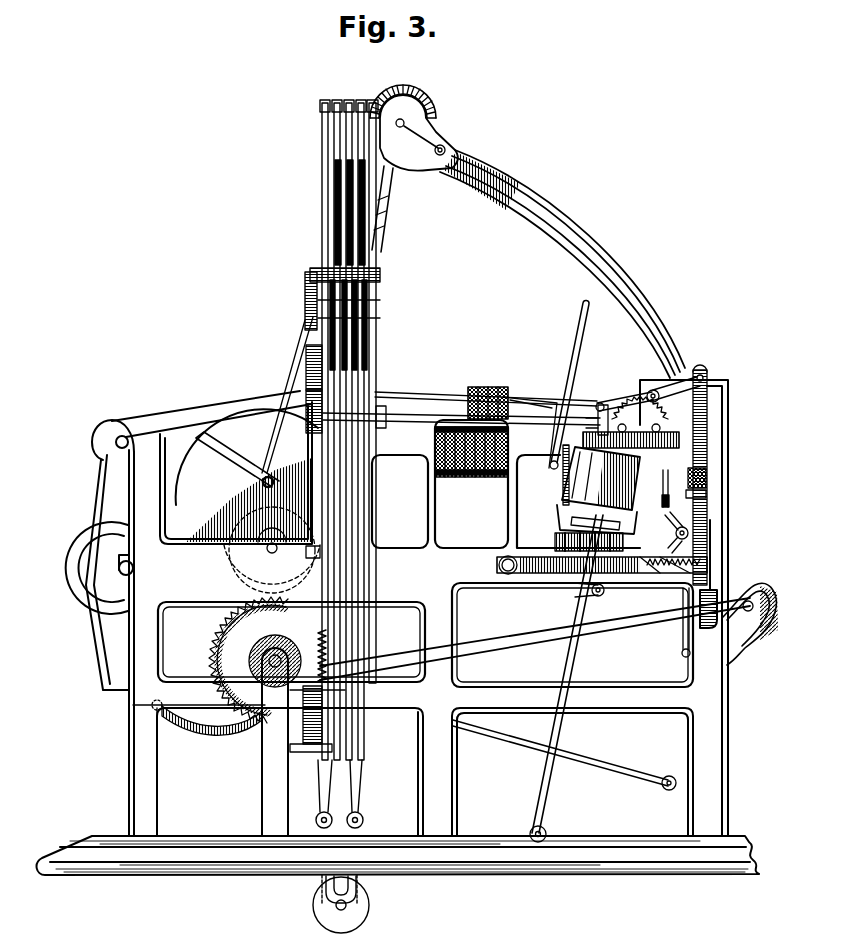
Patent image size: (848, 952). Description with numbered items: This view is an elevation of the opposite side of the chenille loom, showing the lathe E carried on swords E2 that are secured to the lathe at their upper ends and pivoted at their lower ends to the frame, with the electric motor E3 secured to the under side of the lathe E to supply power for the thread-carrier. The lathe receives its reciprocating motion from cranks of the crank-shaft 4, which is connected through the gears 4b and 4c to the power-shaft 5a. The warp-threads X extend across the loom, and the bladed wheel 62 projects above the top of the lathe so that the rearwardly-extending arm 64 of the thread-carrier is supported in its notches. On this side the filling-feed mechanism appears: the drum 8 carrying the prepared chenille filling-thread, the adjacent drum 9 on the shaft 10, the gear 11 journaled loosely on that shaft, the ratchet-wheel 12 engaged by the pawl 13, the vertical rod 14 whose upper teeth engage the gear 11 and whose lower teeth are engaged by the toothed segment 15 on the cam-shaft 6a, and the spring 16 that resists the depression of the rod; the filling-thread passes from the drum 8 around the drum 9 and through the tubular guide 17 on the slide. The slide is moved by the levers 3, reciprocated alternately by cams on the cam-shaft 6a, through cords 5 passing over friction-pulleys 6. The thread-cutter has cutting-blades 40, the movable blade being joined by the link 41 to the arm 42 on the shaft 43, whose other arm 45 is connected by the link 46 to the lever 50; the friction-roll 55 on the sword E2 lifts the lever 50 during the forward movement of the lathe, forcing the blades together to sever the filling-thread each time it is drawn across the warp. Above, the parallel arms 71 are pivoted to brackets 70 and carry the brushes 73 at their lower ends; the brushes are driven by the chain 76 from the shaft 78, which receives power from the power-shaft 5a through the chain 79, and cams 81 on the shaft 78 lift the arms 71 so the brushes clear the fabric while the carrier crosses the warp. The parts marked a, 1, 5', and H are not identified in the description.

The cams 81 is at (403, 100).
The shaft 78 is at (426, 124).
The brackets 70 is at (419, 133).
The chain 76 is at (470, 168).
The chain 79 is at (388, 212).
The parallel arms 71 is at (546, 208).
The brushes 73 is at (660, 378).
The pawl 13 is at (372, 393).
The drum 9 is at (477, 390).
The rod a is at (576, 352).
The tubular guide 17 is at (608, 403).
The rearwardly-extending arm 64 is at (596, 428).
The gear 11 is at (308, 412).
The ratchet-wheel 12 is at (308, 426).
The shaft 10 is at (391, 422).
The gear 4c is at (258, 466).
The warp-threads X is at (530, 432).
The power-shaft 5a is at (264, 483).
The drum 8 is at (470, 478).
The bladed wheel 62 is at (562, 470).
The lathe E is at (601, 478).
The cutting-blades 40 is at (636, 449).
The cords 5 is at (719, 474).
The friction-pulleys 6 is at (706, 494).
The link 41 is at (662, 492).
The arm 42 is at (669, 521).
The shaft 43 is at (689, 532).
The arm 45 is at (667, 548).
The bracket 1 is at (558, 517).
The electric motor E3 is at (571, 541).
The gear 4b is at (234, 560).
The crank-shaft 4 is at (267, 553).
The vertical rod 14 is at (310, 554).
The lever 50 is at (564, 576).
The friction-roll 55 is at (601, 594).
The link 46 is at (658, 577).
The spring 16 is at (326, 648).
The cam-shaft 6a is at (263, 650).
The toothed segment 15 is at (260, 661).
The swords of the lathe E2 is at (572, 635).
The hook 5' is at (711, 631).
The frame opening H is at (572, 772).
The levers 3 is at (610, 766).